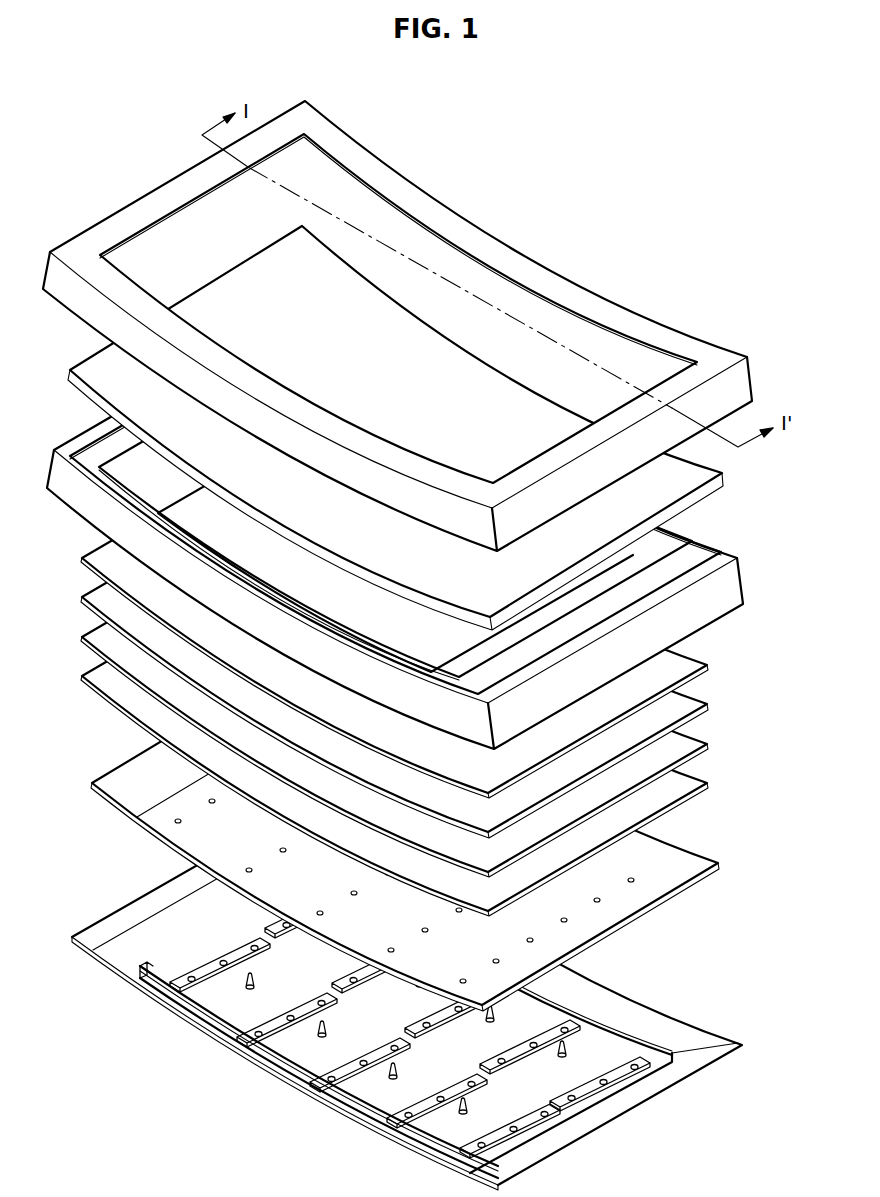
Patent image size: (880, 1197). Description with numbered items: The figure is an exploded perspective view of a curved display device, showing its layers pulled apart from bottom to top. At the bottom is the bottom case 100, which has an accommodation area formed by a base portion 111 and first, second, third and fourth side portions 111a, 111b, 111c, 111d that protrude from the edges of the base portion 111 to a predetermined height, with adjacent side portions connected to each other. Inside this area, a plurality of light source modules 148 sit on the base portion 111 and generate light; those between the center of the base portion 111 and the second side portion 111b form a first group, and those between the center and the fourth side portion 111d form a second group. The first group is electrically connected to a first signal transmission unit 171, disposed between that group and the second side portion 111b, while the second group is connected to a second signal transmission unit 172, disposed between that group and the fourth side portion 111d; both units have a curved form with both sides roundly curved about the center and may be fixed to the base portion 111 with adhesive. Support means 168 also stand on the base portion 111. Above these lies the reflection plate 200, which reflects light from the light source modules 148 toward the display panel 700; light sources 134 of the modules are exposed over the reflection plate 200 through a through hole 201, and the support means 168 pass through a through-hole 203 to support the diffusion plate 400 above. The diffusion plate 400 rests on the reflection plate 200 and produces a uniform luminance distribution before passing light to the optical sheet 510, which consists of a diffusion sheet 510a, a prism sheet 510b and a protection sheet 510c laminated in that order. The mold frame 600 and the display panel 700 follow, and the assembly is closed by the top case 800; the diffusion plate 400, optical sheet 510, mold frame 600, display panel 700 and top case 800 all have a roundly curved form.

The top case 800 is at (738, 384).
The display panel 700 is at (720, 464).
The mold frame 600 is at (733, 587).
The optical sheet 510 is at (463, 653).
The diffusion sheet 510a is at (682, 743).
The prism sheet 510b is at (682, 703).
The protection sheet 510c is at (682, 663).
The diffusion plate 400 is at (682, 782).
The reflection plate 200 is at (437, 826).
The through hole 201 is at (630, 884).
The through-hole 203 is at (563, 892).
The bottom case 100 is at (409, 993).
The base portion 111 is at (300, 1057).
The first side portion 111a is at (173, 893).
The second side portion 111b is at (603, 1005).
The third side portion 111c is at (627, 1098).
The fourth side portion 111d is at (140, 988).
The light source 134 is at (150, 961).
The light source module 148 is at (193, 977).
The support means 168 is at (243, 987).
The first signal transmission unit 171 is at (663, 1053).
The second signal transmission unit 172 is at (338, 1100).